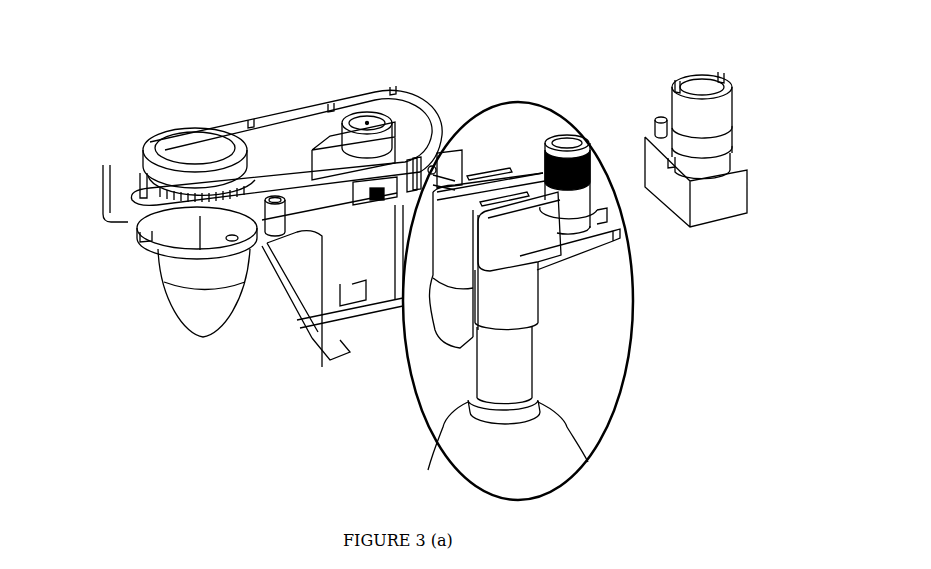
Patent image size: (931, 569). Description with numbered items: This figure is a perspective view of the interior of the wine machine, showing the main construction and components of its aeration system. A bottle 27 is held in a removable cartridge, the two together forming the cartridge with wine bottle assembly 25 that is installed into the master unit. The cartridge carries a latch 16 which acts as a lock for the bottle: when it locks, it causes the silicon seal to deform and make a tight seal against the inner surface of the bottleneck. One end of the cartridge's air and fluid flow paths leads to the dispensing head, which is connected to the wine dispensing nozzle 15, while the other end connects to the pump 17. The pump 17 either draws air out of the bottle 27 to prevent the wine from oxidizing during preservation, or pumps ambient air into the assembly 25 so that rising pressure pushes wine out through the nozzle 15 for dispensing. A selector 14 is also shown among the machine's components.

The selector 14 is at (156, 177).
The wine dispensing nozzle 15 is at (196, 308).
The latch 16 is at (452, 306).
The pump 17 is at (678, 100).
The cartridge with wine bottle assembly 25 is at (638, 355).
The bottle 27 is at (476, 433).